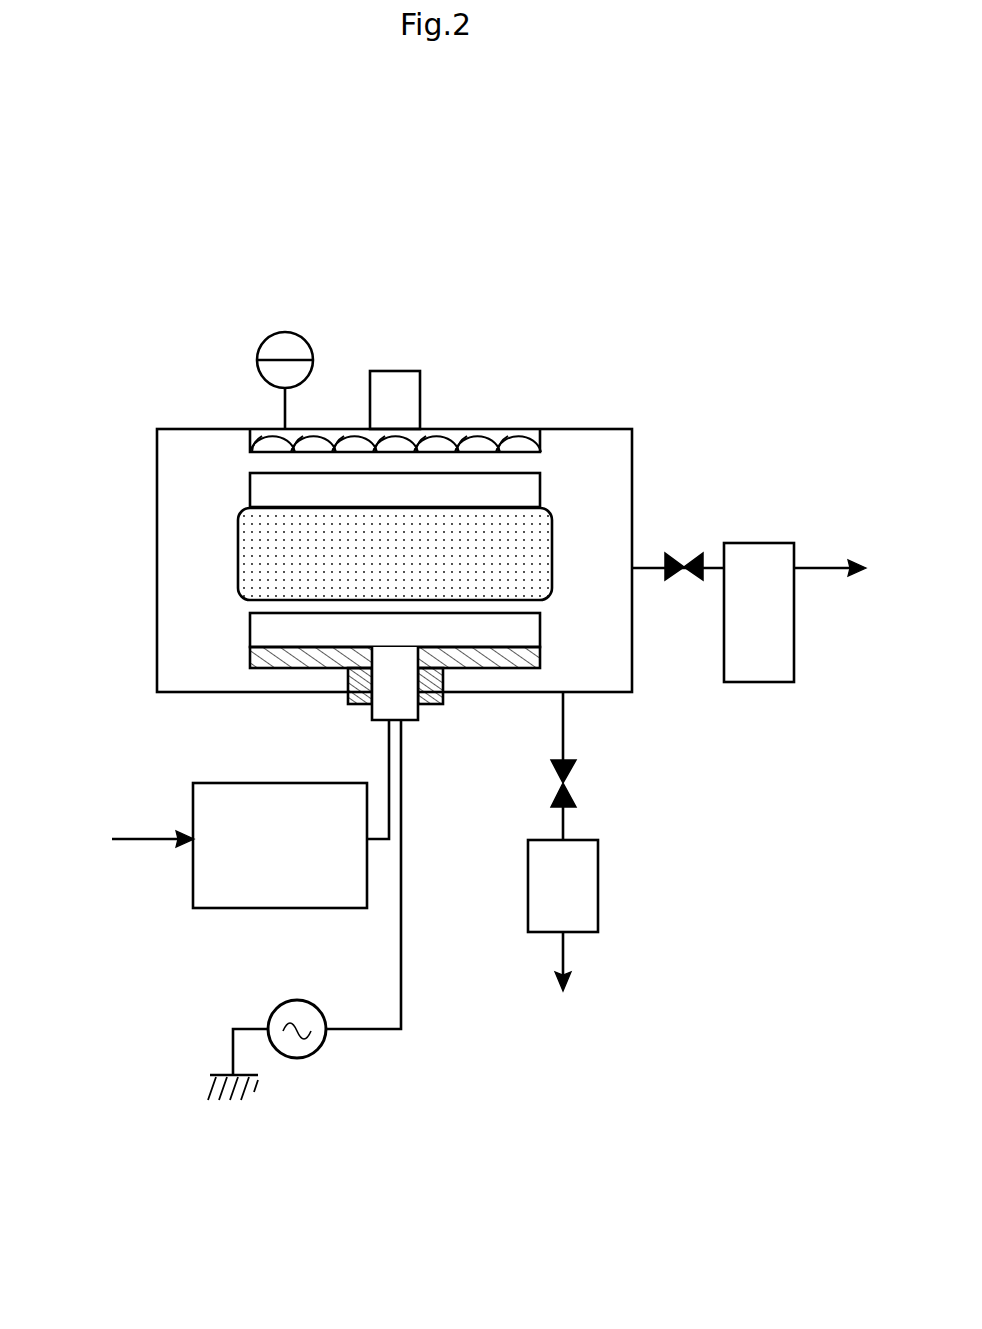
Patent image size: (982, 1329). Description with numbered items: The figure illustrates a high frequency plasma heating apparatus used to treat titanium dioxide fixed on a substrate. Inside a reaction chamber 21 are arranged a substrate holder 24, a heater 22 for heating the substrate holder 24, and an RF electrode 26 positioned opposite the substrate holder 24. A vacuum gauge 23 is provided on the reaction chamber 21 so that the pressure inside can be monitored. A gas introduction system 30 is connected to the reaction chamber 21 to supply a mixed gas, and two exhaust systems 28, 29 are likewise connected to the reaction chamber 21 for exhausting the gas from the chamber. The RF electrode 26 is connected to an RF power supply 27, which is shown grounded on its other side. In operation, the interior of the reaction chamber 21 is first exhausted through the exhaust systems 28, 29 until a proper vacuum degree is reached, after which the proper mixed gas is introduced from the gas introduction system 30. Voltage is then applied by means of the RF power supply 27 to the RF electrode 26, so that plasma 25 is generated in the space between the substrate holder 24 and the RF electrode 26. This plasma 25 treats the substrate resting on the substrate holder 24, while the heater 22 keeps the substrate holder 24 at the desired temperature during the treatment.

The reaction chamber 21 is at (152, 452).
The heater 22 is at (267, 445).
The vacuum gauge 23 is at (284, 343).
The substrate holder 24 is at (452, 490).
The plasma 25 is at (517, 542).
The RF electrode 26 is at (330, 628).
The RF power supply 27 is at (297, 1047).
The exhaust system 28 is at (775, 635).
The exhaust system 29 is at (540, 868).
The gas introduction system 30 is at (222, 878).